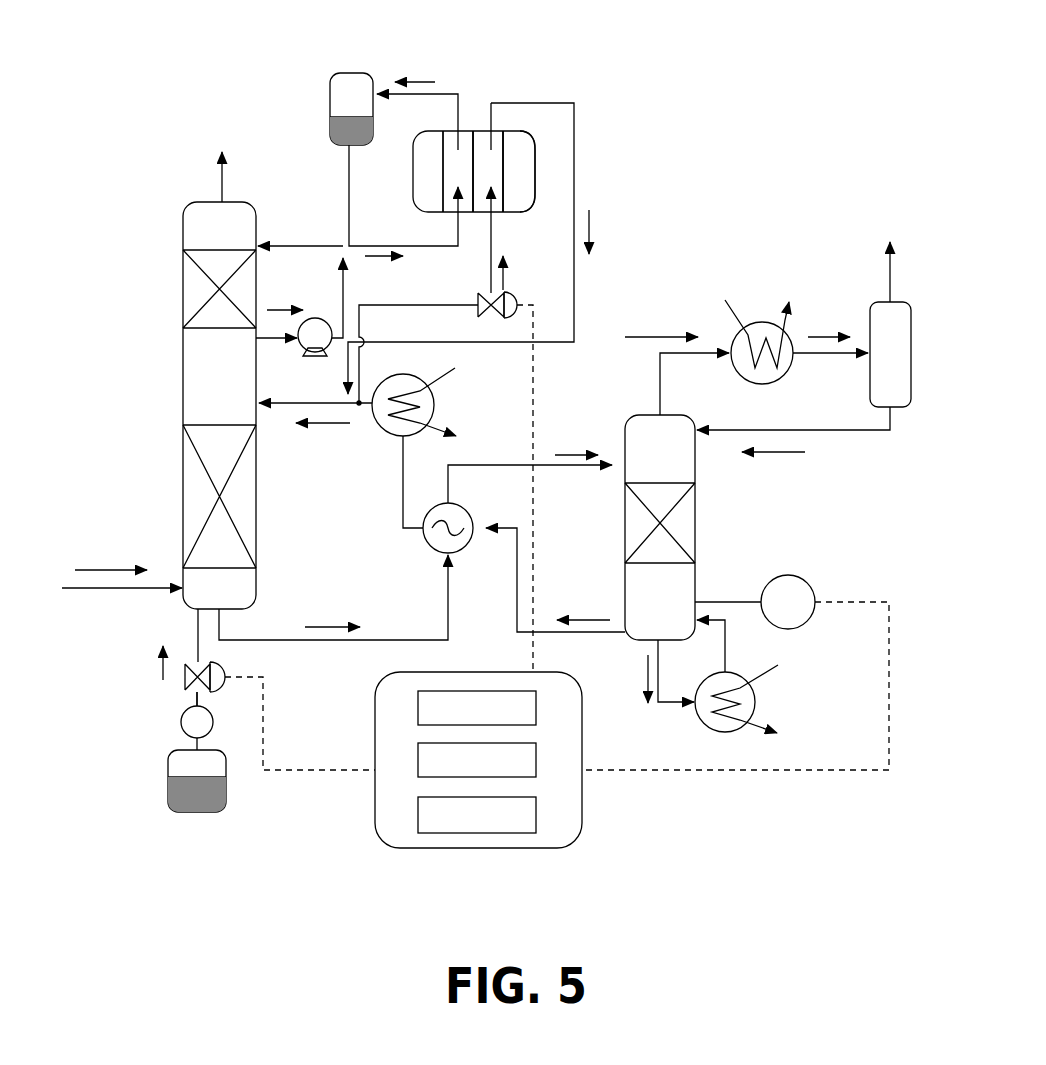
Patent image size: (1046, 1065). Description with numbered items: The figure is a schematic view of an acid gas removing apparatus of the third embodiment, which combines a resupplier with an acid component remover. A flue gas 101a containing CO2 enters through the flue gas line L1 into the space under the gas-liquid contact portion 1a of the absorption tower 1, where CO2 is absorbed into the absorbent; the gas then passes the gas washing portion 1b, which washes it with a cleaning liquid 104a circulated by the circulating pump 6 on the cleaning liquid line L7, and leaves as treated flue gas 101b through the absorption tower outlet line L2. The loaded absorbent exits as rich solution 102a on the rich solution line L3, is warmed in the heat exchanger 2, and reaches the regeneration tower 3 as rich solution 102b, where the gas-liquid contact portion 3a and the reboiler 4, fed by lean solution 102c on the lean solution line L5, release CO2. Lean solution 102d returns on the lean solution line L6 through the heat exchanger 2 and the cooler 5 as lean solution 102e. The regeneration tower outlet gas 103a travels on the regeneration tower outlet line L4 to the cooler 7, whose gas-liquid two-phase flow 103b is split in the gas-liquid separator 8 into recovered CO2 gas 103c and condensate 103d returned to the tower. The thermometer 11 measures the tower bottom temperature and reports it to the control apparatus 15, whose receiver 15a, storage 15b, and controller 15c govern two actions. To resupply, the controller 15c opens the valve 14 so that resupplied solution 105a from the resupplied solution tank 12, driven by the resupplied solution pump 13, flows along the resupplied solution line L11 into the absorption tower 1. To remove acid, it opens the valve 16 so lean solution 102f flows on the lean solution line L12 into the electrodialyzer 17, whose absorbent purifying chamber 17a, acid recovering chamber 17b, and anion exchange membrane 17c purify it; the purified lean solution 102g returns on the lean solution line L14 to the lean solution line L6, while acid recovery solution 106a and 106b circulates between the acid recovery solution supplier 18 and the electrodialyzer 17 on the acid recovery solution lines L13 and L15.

The absorption tower 1 is at (185, 208).
The gas-liquid contact portion 1a is at (190, 496).
The gas washing portion 1b is at (190, 291).
The heat exchanger 2 is at (468, 508).
The regeneration tower 3 is at (628, 415).
The gas-liquid contact portion 3a is at (683, 523).
The reboiler 4 is at (728, 672).
The cooler 5 is at (425, 406).
The circulating pump 6 is at (313, 348).
The cooler 7 is at (790, 372).
The gas-liquid separator 8 is at (911, 382).
The thermometer 11 is at (812, 585).
The resupplied solution tank 12 is at (168, 765).
The resupplied solution pump 13 is at (181, 722).
The valve 14 is at (185, 685).
The control apparatus 15 is at (508, 780).
The receiver 15a is at (536, 710).
The storage 15b is at (536, 760).
The controller 15c is at (536, 812).
The valve 16 is at (510, 320).
The electrodialyzer 17 is at (413, 140).
The absorbent purifying chamber 17a is at (493, 177).
The acid recovering chamber 17b is at (453, 172).
The anion exchange membrane 17c is at (473, 163).
The acid recovery solution supplier 18 is at (350, 72).
The flue gas line L1 is at (72, 592).
The absorption tower outlet line L2 is at (224, 188).
The rich solution line L3 is at (303, 645).
The regeneration tower outlet line L4 is at (660, 378).
The lean solution line L5 is at (660, 682).
The lean solution line L6 is at (523, 636).
The cleaning liquid line L7 is at (276, 340).
The resupplied solution line L11 is at (205, 698).
The lean solution line L12 is at (437, 305).
The acid recovery solution line L13 is at (349, 208).
The lean solution line L14 is at (577, 86).
The acid recovery solution line L15 is at (450, 89).
The flue gas 101a is at (101, 554).
The flue gas 101b is at (226, 134).
The rich solution 102a is at (320, 610).
The rich solution 102b is at (530, 463).
The lean solution 102c is at (612, 679).
The lean solution 102d is at (591, 608).
The lean solution 102e is at (315, 435).
The lean solution 102f is at (535, 274).
The lean solution 102g is at (626, 232).
The regeneration tower outlet gas 103a is at (658, 324).
The gas-liquid two-phase flow 103b is at (835, 321).
The CO2 gas 103c is at (894, 257).
The condensate 103d is at (790, 471).
The cleaning liquid 104a is at (298, 291).
The resupplied solution 105a is at (130, 667).
The acid recovery solution 106a is at (386, 277).
The acid recovery solution 106b is at (434, 66).